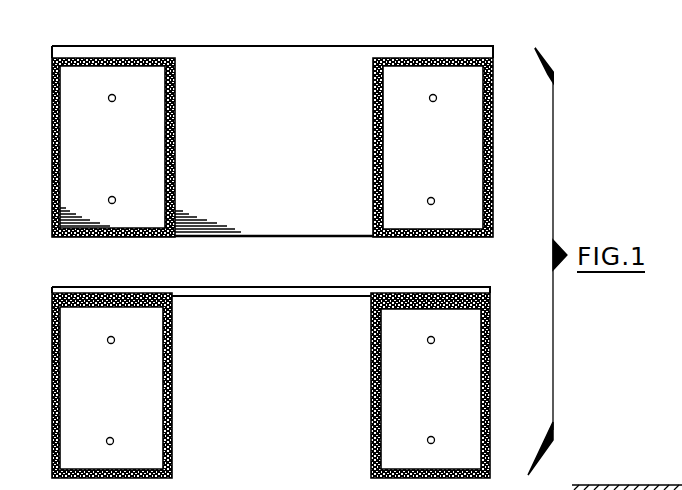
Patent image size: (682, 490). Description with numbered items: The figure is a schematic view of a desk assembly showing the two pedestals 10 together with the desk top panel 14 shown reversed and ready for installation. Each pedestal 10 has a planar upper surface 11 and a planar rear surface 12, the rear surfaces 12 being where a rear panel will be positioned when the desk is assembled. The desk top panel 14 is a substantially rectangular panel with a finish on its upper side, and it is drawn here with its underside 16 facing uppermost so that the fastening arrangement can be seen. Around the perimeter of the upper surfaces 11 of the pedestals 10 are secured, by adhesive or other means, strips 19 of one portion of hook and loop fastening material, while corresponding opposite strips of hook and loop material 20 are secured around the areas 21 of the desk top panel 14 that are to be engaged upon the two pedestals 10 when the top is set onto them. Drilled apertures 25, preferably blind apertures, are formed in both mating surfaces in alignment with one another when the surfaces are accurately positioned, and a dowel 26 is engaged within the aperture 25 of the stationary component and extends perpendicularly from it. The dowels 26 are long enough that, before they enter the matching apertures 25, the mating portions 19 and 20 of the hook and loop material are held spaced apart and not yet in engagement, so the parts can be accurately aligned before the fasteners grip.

The pedestal 10 is at (172, 407).
The upper surface 11 is at (170, 372).
The rear surface 12 is at (505, 311).
The desk top panel 14 is at (280, 71).
The underside 16 is at (334, 58).
The strips of hook and loop fastening material 19 is at (168, 437).
The strips of hook and loop material 20 is at (172, 204).
The areas of the desk top panel 21 is at (156, 124).
The drilled apertures 25 is at (116, 98).
The dowel 26 is at (114, 343).